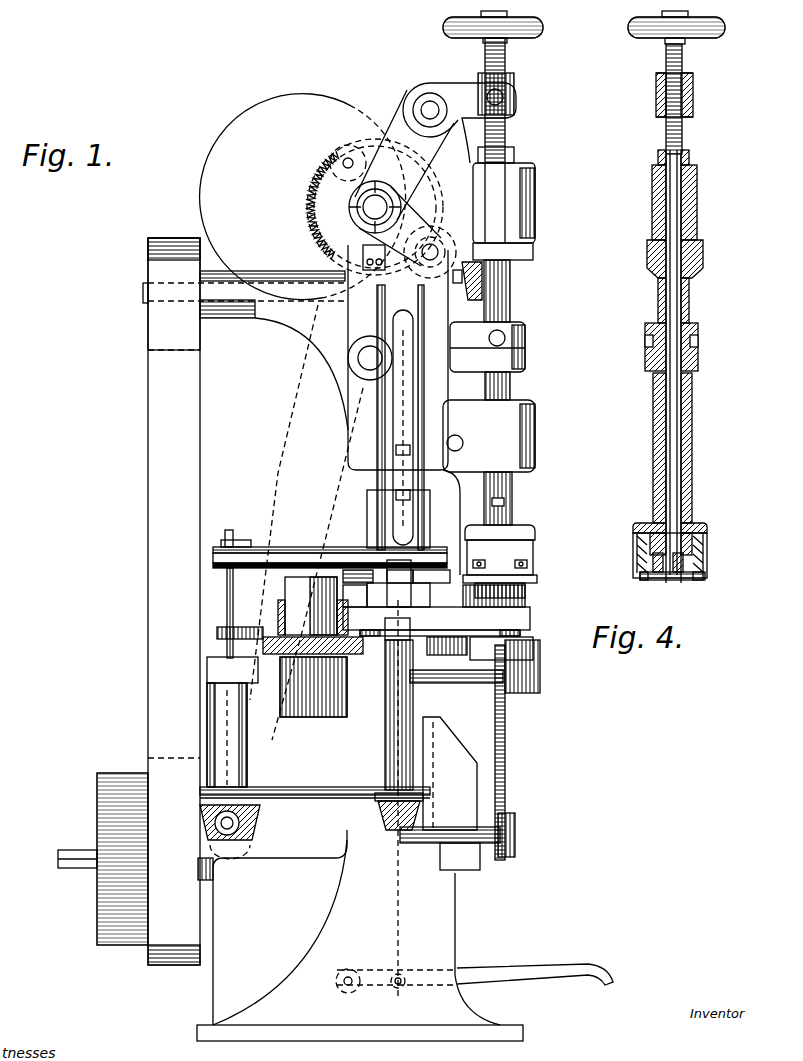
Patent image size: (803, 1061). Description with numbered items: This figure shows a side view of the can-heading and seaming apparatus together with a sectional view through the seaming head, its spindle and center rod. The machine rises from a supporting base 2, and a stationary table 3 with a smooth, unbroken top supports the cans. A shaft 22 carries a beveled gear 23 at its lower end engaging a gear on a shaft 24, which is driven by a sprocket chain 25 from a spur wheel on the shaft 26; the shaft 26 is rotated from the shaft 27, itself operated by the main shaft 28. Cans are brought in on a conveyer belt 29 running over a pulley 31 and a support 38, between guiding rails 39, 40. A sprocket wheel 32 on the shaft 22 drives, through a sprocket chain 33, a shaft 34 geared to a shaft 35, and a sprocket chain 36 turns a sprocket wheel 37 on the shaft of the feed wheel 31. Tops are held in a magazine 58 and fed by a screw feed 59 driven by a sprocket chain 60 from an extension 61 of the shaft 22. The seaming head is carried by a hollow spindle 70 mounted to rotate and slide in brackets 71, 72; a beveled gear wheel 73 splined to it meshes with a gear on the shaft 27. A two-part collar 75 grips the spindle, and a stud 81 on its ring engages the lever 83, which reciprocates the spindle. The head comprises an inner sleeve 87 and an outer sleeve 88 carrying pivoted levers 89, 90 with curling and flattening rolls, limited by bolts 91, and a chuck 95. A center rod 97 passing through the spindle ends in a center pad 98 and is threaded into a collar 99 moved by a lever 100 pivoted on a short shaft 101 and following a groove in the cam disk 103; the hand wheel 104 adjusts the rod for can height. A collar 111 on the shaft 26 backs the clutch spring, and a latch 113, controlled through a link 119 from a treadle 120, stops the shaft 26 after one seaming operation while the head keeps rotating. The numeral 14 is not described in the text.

In FIG. 1, the supporting base 2 is at (447, 952).
In FIG. 1, the table 3 is at (532, 628).
In FIG. 1, the shaft 14 is at (510, 290).
In FIG. 1, the shaft 22 is at (207, 704).
In FIG. 1, the beveled gear 23 is at (262, 815).
In FIG. 1, the shaft 24 is at (232, 832).
In FIG. 1, the sprocket chain 25 is at (270, 495).
In FIG. 1, the shaft 26 is at (345, 230).
In FIG. 1, the shaft 27 is at (137, 295).
In FIG. 1, the main shaft 28 is at (62, 868).
In FIG. 1, the conveyer belt 29 is at (305, 654).
In FIG. 1, the pulley 31 is at (311, 700).
In FIG. 1, the sprocket wheel 32 is at (252, 790).
In FIG. 1, the sprocket chain 33 is at (392, 800).
In FIG. 1, the shaft 34 is at (392, 828).
In FIG. 1, the shaft 35 is at (517, 838).
In FIG. 1, the sprocket chain 36 is at (507, 748).
In FIG. 1, the sprocket wheel 37 is at (492, 700).
In FIG. 1, the support 38 is at (283, 658).
In FIG. 1, the guiding rail 39 is at (280, 625).
In FIG. 1, the guiding rail 40 is at (346, 605).
In FIG. 1, the magazine 58 is at (378, 432).
In FIG. 1, the screw feed 59 is at (356, 565).
In FIG. 1, the sprocket chain 60 is at (286, 553).
In FIG. 1, the extension of the shaft 61 is at (227, 607).
In FIG. 1, the spindle 70 is at (515, 305).
In FIG. 4, the spindle 70 is at (690, 292).
In FIG. 1, the bracket 71 is at (536, 212).
In FIG. 1, the bracket 72 is at (536, 447).
In FIG. 1, the beveled gear wheel 73 is at (525, 268).
In FIG. 4, the beveled gear wheel 73 is at (647, 262).
In FIG. 4, the collar 75 is at (698, 366).
In FIG. 1, the stud 81 is at (366, 360).
In FIG. 1, the lever 83 is at (525, 355).
In FIG. 1, the inner sleeve 87 is at (530, 528).
In FIG. 4, the inner sleeve 87 is at (645, 526).
In FIG. 1, the outer sleeve 88 is at (534, 548).
In FIG. 4, the outer sleeve 88 is at (640, 544).
In FIG. 1, the pivoted lever 89 is at (462, 570).
In FIG. 4, the pivoted lever 89 is at (638, 568).
In FIG. 1, the pivoted lever 90 is at (540, 575).
In FIG. 4, the pivoted lever 90 is at (708, 562).
In FIG. 1, the bolt 91 is at (505, 500).
In FIG. 4, the chuck 95 is at (696, 582).
In FIG. 1, the center rod 97 is at (506, 138).
In FIG. 4, the center rod 97 is at (683, 136).
In FIG. 4, the center pad 98 is at (668, 581).
In FIG. 1, the threaded collar 99 is at (515, 79).
In FIG. 4, the threaded collar 99 is at (694, 96).
In FIG. 1, the lever 100 is at (468, 86).
In FIG. 1, the short shaft 101 is at (418, 96).
In FIG. 1, the cam disk 103 is at (345, 113).
In FIG. 1, the hand wheel 104 is at (545, 27).
In FIG. 1, the collar 111 is at (349, 205).
In FIG. 1, the latch 113 is at (428, 242).
In FIG. 1, the link 119 is at (398, 918).
In FIG. 1, the treadle 120 is at (536, 970).